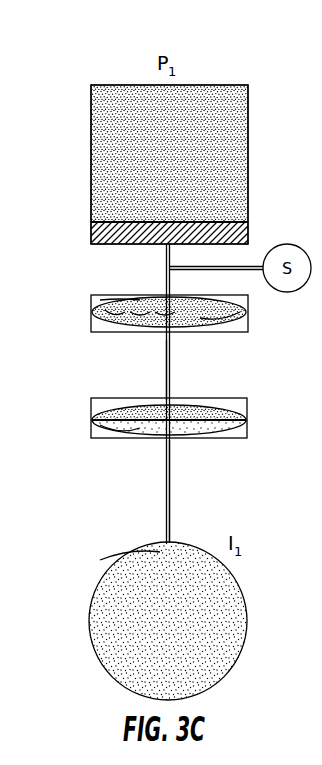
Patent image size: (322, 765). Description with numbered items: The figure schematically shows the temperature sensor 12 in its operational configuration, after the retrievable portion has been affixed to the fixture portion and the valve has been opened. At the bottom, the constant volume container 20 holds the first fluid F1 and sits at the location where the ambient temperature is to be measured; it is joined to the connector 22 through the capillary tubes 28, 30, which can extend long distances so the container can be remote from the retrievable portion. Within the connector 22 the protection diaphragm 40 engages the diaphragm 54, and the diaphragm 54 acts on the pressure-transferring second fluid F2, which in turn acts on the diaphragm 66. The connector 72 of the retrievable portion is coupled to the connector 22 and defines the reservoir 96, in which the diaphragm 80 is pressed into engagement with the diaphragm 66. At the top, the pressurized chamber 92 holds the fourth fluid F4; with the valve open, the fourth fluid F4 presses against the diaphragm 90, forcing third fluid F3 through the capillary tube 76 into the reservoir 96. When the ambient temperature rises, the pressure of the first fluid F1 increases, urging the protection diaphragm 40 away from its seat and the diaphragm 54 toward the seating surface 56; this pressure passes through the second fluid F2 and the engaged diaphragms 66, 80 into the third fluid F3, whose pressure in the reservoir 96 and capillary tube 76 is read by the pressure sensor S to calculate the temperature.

The temperature sensor 12 is at (105, 54).
The constant volume container 20 is at (88, 620).
The connector 22 is at (90, 327).
The capillary tube 28 is at (172, 488).
The capillary tube 30 is at (170, 360).
The protection diaphragm 40 is at (157, 425).
The diaphragm 54 is at (193, 414).
The seating surface 56 is at (108, 302).
The diaphragm 66 is at (167, 315).
The connector 72 is at (90, 307).
The capillary tube 76 is at (165, 263).
The diaphragm 80 is at (115, 317).
The diaphragm 90 is at (108, 220).
The pressurized chamber 92 is at (108, 153).
The reservoir 96 is at (138, 317).
The first fluid F1 is at (118, 580).
The second fluid F2 is at (120, 425).
The third fluid F3 is at (225, 325).
The fourth fluid F4 is at (108, 118).